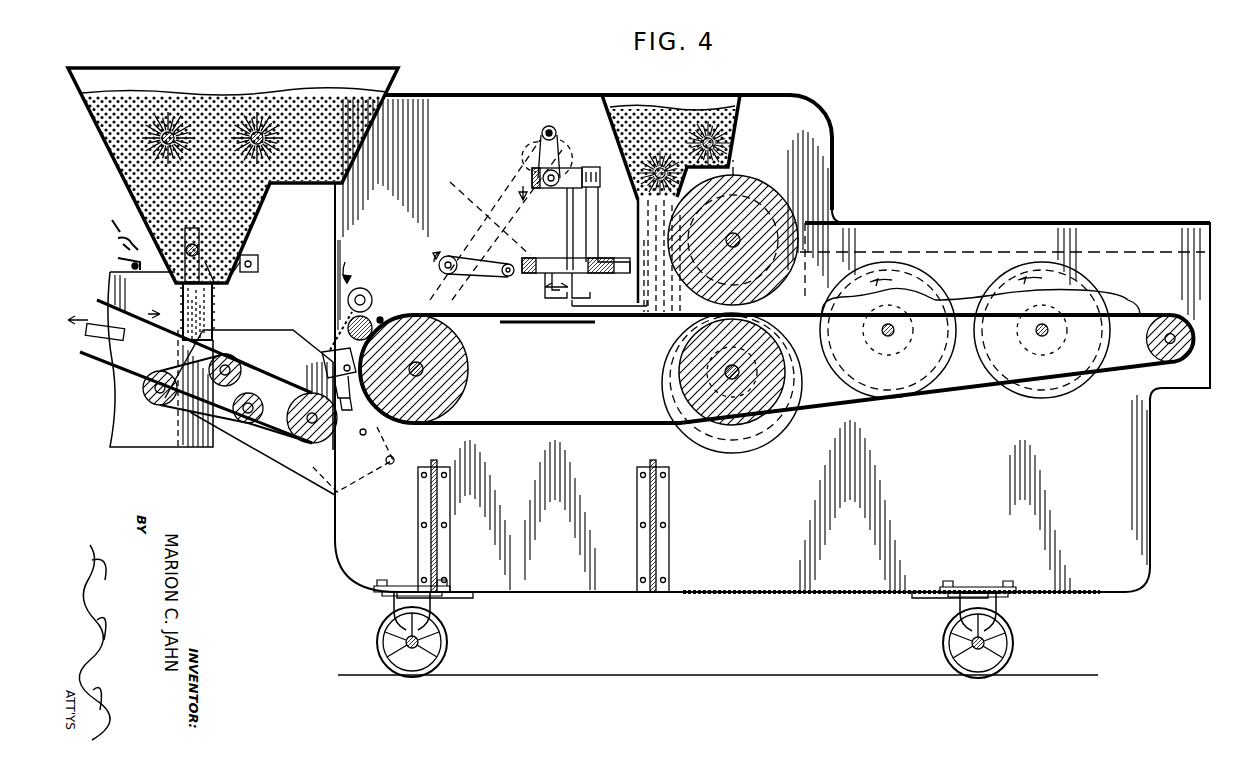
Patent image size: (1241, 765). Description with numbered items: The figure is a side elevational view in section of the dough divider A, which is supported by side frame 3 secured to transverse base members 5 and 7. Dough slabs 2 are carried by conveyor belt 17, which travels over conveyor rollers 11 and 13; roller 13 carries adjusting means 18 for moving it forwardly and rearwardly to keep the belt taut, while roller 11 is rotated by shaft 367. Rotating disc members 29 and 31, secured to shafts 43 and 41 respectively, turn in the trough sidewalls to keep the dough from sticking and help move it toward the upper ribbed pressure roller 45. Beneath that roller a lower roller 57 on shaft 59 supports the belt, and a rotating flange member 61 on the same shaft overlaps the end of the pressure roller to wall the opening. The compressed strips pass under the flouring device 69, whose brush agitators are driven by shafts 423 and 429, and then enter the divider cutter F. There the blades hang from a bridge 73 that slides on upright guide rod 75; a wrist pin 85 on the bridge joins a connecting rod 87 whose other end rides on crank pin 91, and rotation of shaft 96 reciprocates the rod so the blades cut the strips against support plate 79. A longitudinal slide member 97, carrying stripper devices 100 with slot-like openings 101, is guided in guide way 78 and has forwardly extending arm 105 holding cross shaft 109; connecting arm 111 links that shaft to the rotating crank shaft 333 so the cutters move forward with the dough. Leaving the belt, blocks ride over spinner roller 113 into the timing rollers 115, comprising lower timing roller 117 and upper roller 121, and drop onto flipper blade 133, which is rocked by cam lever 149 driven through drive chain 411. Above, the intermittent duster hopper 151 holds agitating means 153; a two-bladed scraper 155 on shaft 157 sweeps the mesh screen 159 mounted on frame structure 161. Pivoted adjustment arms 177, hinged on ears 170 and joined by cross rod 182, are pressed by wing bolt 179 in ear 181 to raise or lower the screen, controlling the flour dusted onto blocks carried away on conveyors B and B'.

The dough slab 2 is at (1124, 302).
The side frame 3 is at (1140, 540).
The transverse base member 5 is at (470, 596).
The transverse base member 7 is at (623, 245).
The conveyor roller 11 is at (463, 375).
The conveyor roller 13 is at (1190, 333).
The conveyor belt 17 is at (950, 395).
The adjusting means 18 is at (1124, 383).
The rotating disc member 29 is at (920, 283).
The rotating disc member 31 is at (1058, 392).
The shaft 41 is at (1042, 330).
The shaft 43 is at (888, 330).
The pressure roller 45 is at (800, 192).
The lower roller 57 is at (700, 330).
The shaft 59 is at (727, 373).
The rotating flange member 61 is at (767, 444).
The flouring device 69 is at (714, 100).
The bridge 73 is at (590, 165).
The upright guide rod 75 is at (600, 210).
The guide way 78 is at (665, 228).
The support plate 79 is at (537, 326).
The wrist pin 85 is at (531, 178).
The connecting rod 87 is at (556, 133).
The crank pin 91 is at (545, 127).
The shaft 96 is at (538, 152).
The longitudinal slide member 97 is at (518, 322).
The stripper device 100 is at (590, 293).
The slot-like opening 101 is at (570, 326).
The forwardly extending arm 105 is at (516, 277).
The cross shaft 109 is at (507, 262).
The connecting arm 111 is at (452, 256).
The spinner roller 113 is at (380, 318).
The adjustable timing rollers 115 is at (352, 261).
The lower timing roller 117 is at (348, 326).
The upper roller 121 is at (348, 297).
The flipper blade 133 is at (334, 355).
The cam lever 149 is at (388, 412).
The hopper member 151 is at (387, 84).
The agitating means 153 is at (257, 112).
The rotating scraper 155 is at (208, 270).
The shaft 157 is at (186, 252).
The mesh screen member 159 is at (230, 264).
The frame structure 161 is at (214, 300).
The ear 170 is at (258, 264).
The pivoted adjustment arm 177 is at (118, 262).
The wing bolt 179 is at (127, 238).
The ear 181 is at (122, 242).
The cross rod 182 is at (135, 268).
The crank shaft 333 is at (448, 275).
The shaft 367 is at (420, 372).
The drive chain 411 is at (495, 220).
The shaft 423 is at (640, 103).
The shaft 429 is at (740, 150).
The dough divider A is at (968, 207).
The conveyor belt B is at (194, 359).
The conveyor belt B' is at (239, 412).
The divider cutter F is at (512, 130).